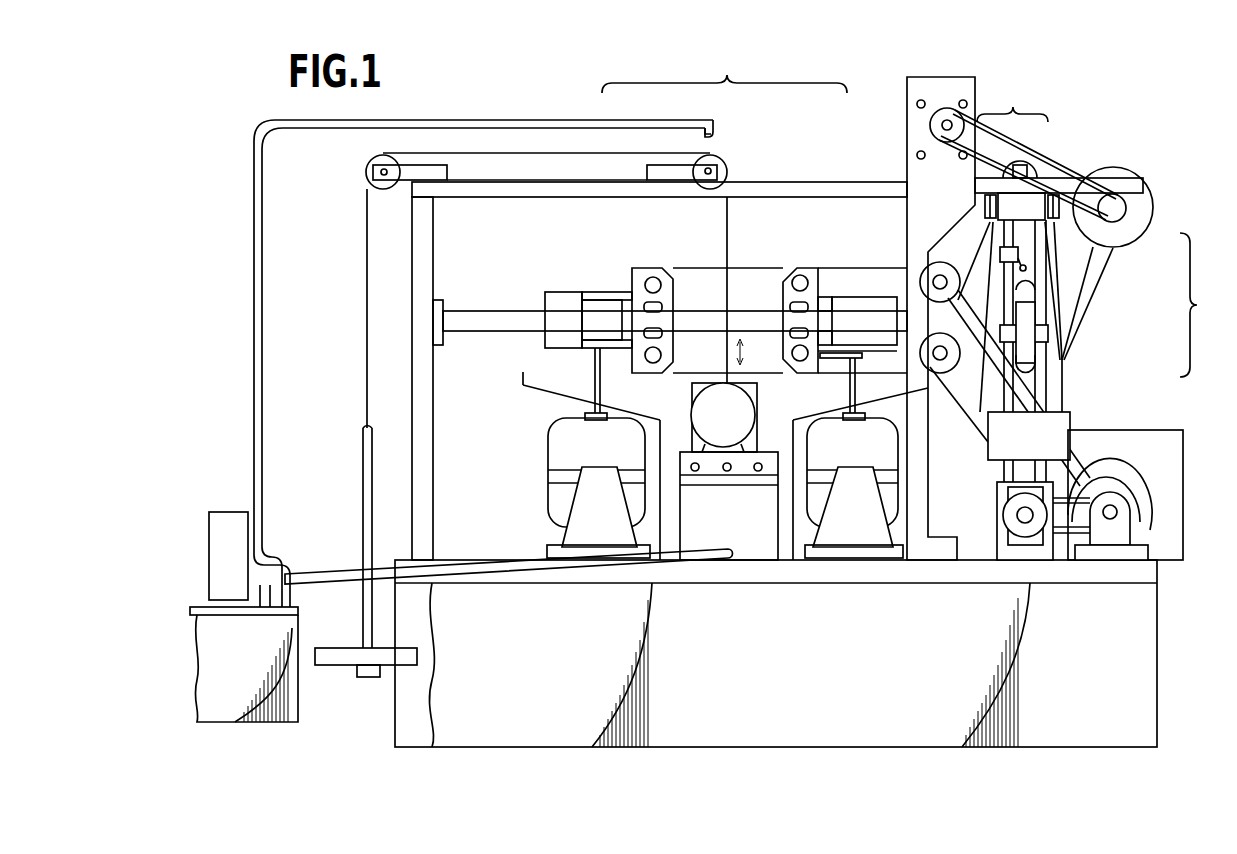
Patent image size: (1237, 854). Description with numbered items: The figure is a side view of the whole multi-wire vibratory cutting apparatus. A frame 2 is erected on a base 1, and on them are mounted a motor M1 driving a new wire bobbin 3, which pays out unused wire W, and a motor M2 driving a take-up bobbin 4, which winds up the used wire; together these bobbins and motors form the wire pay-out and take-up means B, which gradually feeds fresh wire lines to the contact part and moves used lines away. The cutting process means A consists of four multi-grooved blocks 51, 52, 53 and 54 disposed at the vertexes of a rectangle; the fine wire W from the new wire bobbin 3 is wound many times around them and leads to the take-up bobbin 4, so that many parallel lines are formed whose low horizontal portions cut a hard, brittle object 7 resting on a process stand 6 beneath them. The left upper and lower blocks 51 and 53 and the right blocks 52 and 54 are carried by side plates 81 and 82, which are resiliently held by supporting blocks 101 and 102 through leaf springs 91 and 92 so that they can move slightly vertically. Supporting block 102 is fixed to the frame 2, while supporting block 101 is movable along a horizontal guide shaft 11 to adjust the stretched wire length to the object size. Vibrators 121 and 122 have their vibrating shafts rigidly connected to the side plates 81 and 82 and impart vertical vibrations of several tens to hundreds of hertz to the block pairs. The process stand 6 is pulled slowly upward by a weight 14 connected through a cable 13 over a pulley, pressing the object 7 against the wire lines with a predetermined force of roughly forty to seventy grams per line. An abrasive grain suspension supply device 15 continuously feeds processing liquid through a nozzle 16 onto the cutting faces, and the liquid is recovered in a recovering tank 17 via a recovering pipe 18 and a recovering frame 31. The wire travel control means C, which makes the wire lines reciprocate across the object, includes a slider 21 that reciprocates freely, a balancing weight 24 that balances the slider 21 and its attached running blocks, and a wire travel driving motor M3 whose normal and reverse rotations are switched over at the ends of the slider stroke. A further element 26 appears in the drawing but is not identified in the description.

The base 1 is at (482, 735).
The frame 2 is at (808, 183).
The new wire bobbin 3 is at (1140, 520).
The take-up bobbin 4 is at (1147, 205).
The multi-grooved block 51 is at (650, 362).
The multi-grooved block 52 is at (797, 360).
The multi-grooved block 53 is at (655, 278).
The multi-grooved block 54 is at (795, 278).
The process stand 6 is at (750, 470).
The object 7 is at (720, 437).
The side plate 81 is at (640, 284).
The side plate 82 is at (815, 272).
The leaf spring 91 is at (590, 292).
The leaf spring 92 is at (865, 287).
The supporting block 101 is at (545, 300).
The supporting block 102 is at (902, 315).
The guide shaft 11 is at (468, 333).
The vibrator 121 is at (550, 450).
The vibrator 122 is at (898, 452).
The cable 13 is at (484, 153).
The weight 14 is at (335, 665).
The abrasive grain suspension supply device 15 is at (228, 512).
The nozzle 16 is at (718, 130).
The recovering tank 17 is at (262, 718).
The recovering pipe 18 is at (492, 583).
The slider 21 is at (1045, 333).
The balancing weight 24 is at (1050, 420).
The guide rods 26 is at (1040, 275).
The recovering frame 31 is at (540, 400).
The cutting process means A is at (724, 72).
The wire pay-out and take-up means B is at (1199, 305).
The wire travel control means C is at (1012, 101).
The motor M1 is at (1010, 535).
The motor M2 is at (930, 125).
The wire travel driving motor M3 is at (1145, 480).
The wire W is at (700, 268).